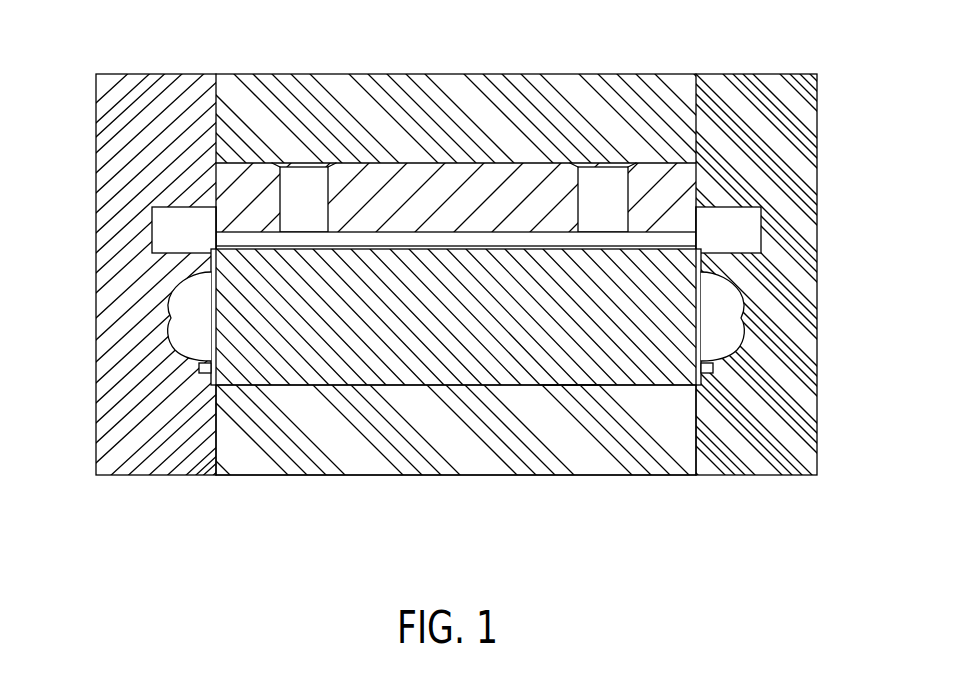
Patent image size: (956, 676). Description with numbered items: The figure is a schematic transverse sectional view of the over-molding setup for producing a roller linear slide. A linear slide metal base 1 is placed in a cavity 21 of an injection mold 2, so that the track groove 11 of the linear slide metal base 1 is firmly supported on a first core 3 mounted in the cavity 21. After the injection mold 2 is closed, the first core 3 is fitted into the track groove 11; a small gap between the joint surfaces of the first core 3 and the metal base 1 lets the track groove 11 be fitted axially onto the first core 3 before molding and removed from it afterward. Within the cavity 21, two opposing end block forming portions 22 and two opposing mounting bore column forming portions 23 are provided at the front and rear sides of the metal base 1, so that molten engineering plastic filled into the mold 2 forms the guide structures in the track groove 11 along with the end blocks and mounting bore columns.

The linear slide metal base 1 is at (476, 192).
The track groove 11 is at (373, 241).
The injection mold 2 is at (472, 447).
The cavity 21 is at (571, 387).
The end block forming portions 22 is at (175, 329).
The mounting bore column forming portions 23 is at (163, 228).
The first core 3 is at (420, 367).